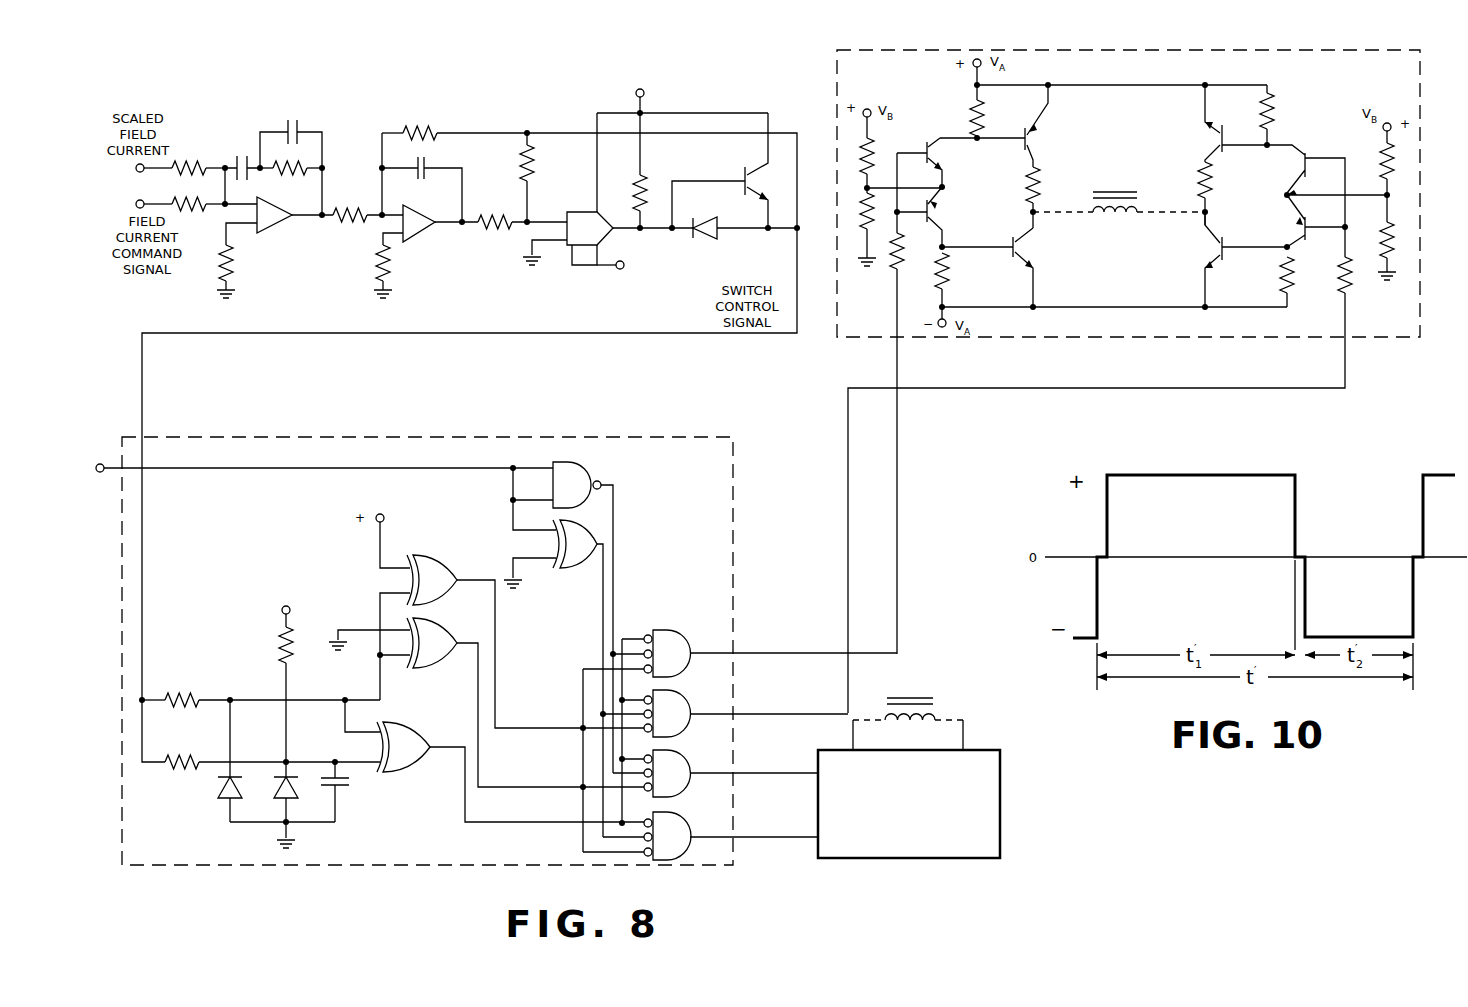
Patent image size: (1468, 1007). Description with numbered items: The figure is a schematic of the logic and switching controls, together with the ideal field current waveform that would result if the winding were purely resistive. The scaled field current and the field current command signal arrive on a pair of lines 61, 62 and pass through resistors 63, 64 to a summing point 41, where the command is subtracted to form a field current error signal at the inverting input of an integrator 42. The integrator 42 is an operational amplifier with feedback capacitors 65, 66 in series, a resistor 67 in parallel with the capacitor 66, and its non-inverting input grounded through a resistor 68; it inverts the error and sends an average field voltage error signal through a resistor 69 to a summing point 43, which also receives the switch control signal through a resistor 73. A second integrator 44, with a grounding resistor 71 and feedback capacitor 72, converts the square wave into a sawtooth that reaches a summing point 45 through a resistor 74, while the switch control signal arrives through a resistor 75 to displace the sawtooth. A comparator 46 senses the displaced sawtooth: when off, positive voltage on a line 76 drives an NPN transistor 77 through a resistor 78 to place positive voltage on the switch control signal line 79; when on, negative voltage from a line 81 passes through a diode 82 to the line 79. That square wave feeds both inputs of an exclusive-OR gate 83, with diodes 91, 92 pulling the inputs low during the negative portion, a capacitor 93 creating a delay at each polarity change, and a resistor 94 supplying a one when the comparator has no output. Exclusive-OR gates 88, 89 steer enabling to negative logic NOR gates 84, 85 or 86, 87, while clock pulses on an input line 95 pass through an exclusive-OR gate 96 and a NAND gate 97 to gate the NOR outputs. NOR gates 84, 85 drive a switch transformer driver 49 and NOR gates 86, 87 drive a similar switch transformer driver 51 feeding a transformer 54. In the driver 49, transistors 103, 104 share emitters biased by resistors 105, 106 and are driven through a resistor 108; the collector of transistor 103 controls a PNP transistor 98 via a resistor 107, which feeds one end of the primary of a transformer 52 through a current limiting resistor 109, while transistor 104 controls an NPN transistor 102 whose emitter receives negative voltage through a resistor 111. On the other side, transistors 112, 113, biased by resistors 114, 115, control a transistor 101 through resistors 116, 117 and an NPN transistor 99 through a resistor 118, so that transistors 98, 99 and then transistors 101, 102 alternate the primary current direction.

The summing point 41 is at (226, 218).
The integrator 42 is at (278, 222).
The summing point 43 is at (380, 218).
The integrator 44 is at (423, 232).
The summing point 45 is at (524, 224).
The comparator 46 is at (582, 208).
The switch transformer driver 49 is at (1363, 328).
The switch transformer driver 51 is at (897, 852).
The transformer 52 is at (1125, 188).
The transformer 54 is at (920, 688).
The line 61 is at (137, 173).
The line 62 is at (133, 204).
The resistor 63 is at (198, 162).
The resistor 64 is at (200, 210).
The capacitor 65 is at (250, 156).
The capacitor 66 is at (295, 120).
The resistor 67 is at (300, 160).
The resistor 68 is at (220, 265).
The resistor 69 is at (355, 208).
The resistor 71 is at (390, 262).
The capacitor 72 is at (430, 162).
The resistor 73 is at (430, 128).
The resistor 74 is at (493, 230).
The resistor 75 is at (535, 168).
The line 76 is at (645, 99).
The NPN transistor 77 is at (745, 172).
The resistor 78 is at (645, 180).
The switch control signal line 79 is at (515, 330).
The line 81 is at (603, 270).
The diode 82 is at (693, 238).
The exclusive-OR gate 83 is at (420, 760).
The negative logic NOR gate 84 is at (672, 637).
The negative logic NOR gate 85 is at (675, 703).
The negative logic NOR gate 86 is at (673, 783).
The negative logic NOR gate 87 is at (665, 860).
The exclusive-OR gate 88 is at (438, 565).
The exclusive-OR gate 89 is at (437, 657).
The diode 91 is at (220, 782).
The diode 92 is at (298, 782).
The capacitor 93 is at (348, 788).
The resistor 94 is at (282, 640).
The input line 95 is at (366, 468).
The exclusive-OR gate 96 is at (578, 553).
The NAND gate 97 is at (572, 463).
The PNP transistor 98 is at (1025, 130).
The NPN transistor 99 is at (1225, 250).
The transistor 101 is at (1224, 130).
The NPN transistor 102 is at (1008, 252).
The NPN transistor 103 is at (927, 142).
The PNP transistor 104 is at (924, 212).
The resistor 105 is at (860, 167).
The resistor 106 is at (860, 225).
The resistor 107 is at (965, 100).
The resistor 108 is at (892, 262).
The current limiting resistor 109 is at (1040, 175).
The resistor 111 is at (935, 265).
The NPN transistor 112 is at (1305, 153).
The PNP transistor 113 is at (1310, 233).
The resistor 114 is at (1395, 160).
The resistor 115 is at (1395, 240).
The resistor 116 is at (1275, 100).
The current limiting resistor 117 is at (1215, 175).
The resistor 118 is at (1295, 285).